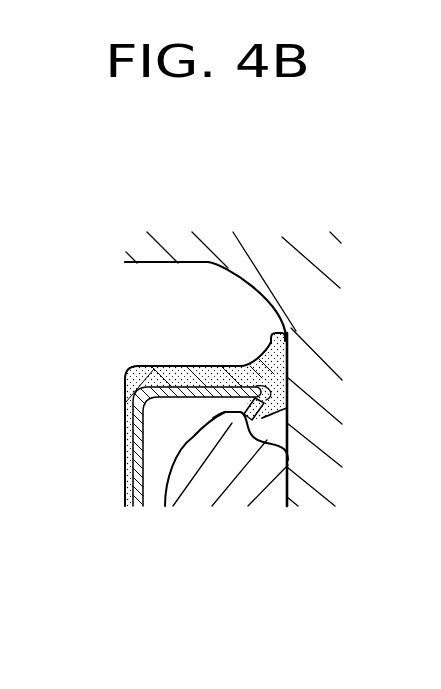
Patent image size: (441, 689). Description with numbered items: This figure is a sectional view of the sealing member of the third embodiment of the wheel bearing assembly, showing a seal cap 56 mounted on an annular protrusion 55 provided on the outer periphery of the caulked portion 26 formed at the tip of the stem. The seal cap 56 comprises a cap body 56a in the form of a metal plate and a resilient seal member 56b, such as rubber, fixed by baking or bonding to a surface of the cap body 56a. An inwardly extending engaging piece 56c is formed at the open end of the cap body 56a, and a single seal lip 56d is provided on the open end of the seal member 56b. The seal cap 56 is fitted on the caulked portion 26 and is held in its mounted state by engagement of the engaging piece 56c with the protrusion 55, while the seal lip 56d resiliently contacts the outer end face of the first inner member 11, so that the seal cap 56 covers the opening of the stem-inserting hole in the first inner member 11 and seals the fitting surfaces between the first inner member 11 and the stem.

The first inner member 11 is at (288, 231).
The caulked portion 26 is at (214, 482).
The annular protrusion 55 is at (229, 422).
The seal cap 56 is at (220, 389).
The cap body 56a is at (130, 484).
The resilient seal member 56b is at (158, 378).
The engaging piece 56c is at (287, 421).
The seal lip 56d is at (289, 340).